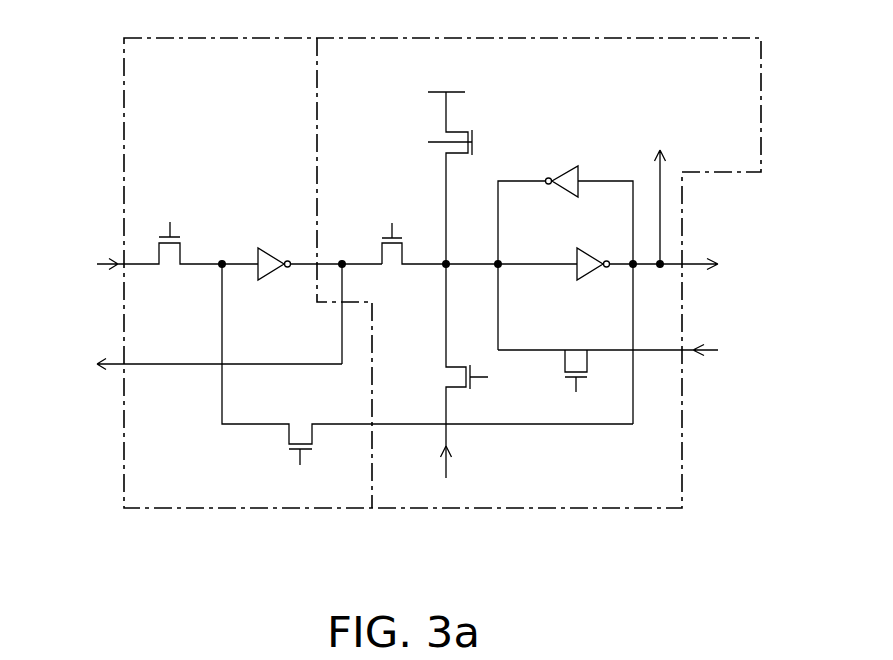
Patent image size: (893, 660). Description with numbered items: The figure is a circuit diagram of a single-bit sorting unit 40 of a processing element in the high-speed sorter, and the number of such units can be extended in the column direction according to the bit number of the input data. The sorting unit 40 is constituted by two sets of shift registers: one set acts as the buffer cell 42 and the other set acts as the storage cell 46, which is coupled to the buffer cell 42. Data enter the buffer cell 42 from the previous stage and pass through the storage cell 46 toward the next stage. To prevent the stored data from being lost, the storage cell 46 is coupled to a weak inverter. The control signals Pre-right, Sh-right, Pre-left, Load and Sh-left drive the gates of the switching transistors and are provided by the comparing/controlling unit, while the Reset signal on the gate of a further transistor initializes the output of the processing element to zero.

The sorting unit 40 is at (104, 78).
The buffer cell 42 is at (378, 298).
The storage cell 46 is at (502, 319).